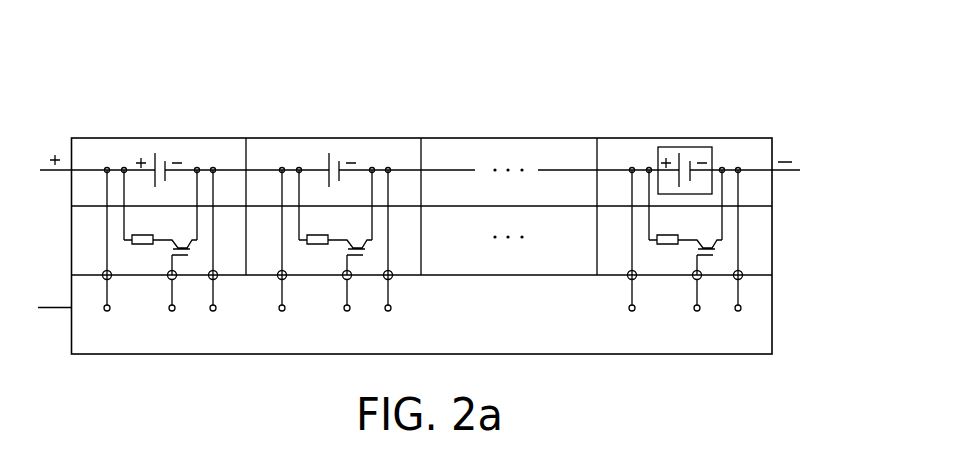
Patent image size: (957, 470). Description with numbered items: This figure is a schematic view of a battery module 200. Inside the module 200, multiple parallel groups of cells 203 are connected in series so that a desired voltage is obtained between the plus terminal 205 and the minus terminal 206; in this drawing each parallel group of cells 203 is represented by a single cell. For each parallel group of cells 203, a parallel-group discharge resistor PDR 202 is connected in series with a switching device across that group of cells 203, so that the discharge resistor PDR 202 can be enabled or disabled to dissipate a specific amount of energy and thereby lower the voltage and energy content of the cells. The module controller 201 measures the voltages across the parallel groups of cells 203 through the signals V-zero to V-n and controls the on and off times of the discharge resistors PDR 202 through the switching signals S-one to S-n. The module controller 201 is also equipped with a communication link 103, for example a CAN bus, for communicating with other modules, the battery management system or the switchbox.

The battery module 200 is at (550, 92).
The module controller 201 is at (753, 301).
The parallel-group discharge resistor PDR 202 is at (753, 234).
The parallel group of cells 203 is at (750, 155).
The plus terminal 205 is at (40, 170).
The minus terminal 206 is at (797, 170).
The communication link 103 is at (52, 307).